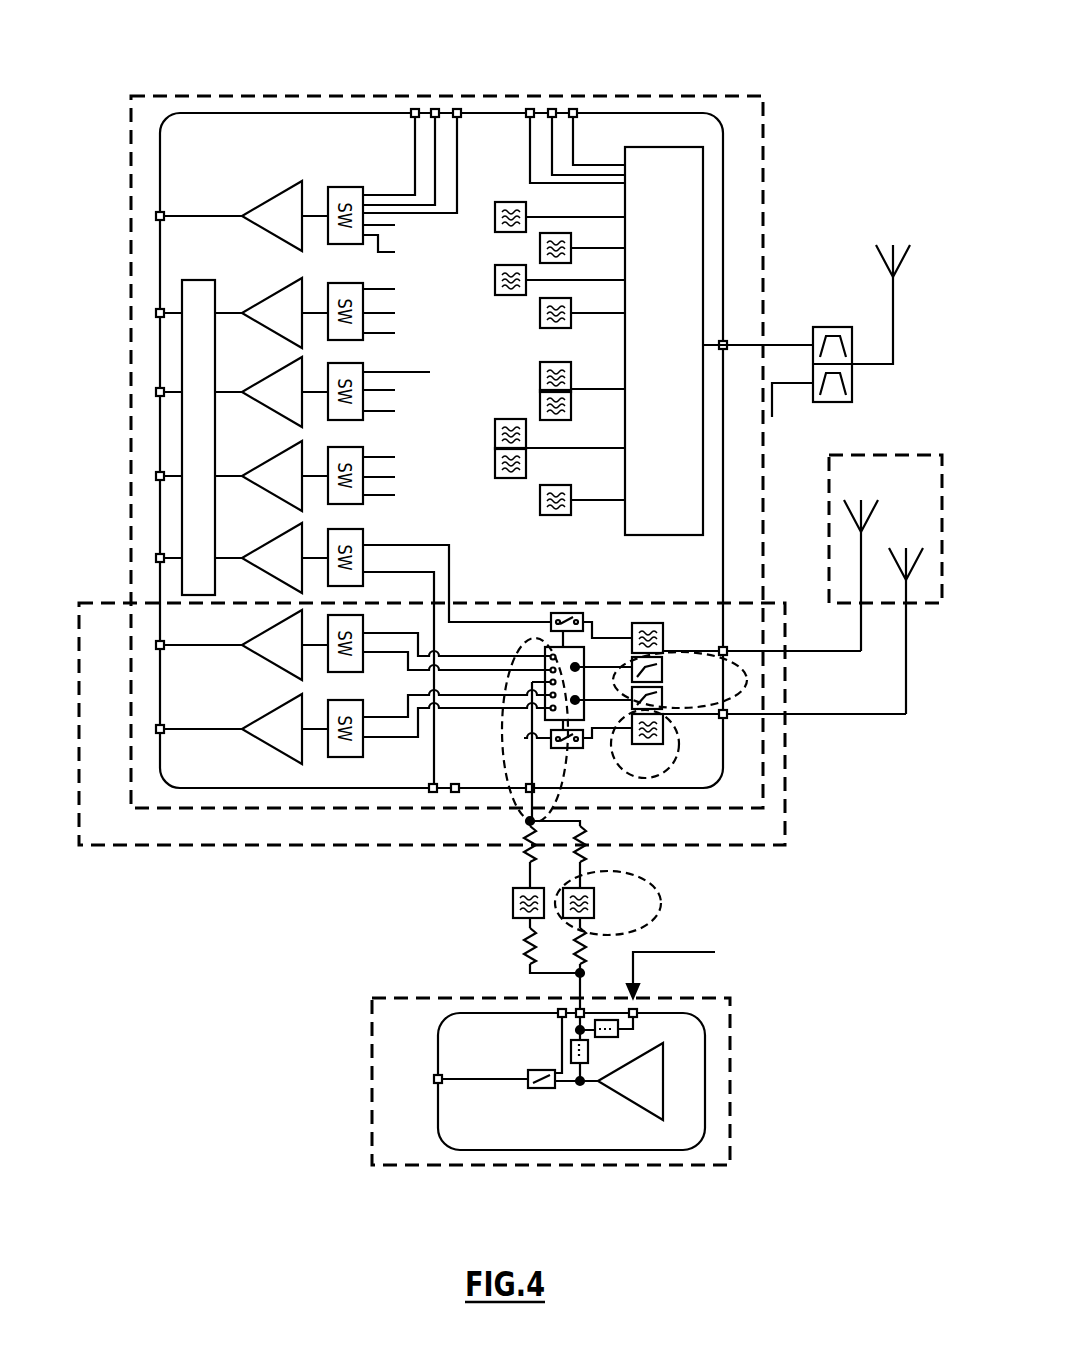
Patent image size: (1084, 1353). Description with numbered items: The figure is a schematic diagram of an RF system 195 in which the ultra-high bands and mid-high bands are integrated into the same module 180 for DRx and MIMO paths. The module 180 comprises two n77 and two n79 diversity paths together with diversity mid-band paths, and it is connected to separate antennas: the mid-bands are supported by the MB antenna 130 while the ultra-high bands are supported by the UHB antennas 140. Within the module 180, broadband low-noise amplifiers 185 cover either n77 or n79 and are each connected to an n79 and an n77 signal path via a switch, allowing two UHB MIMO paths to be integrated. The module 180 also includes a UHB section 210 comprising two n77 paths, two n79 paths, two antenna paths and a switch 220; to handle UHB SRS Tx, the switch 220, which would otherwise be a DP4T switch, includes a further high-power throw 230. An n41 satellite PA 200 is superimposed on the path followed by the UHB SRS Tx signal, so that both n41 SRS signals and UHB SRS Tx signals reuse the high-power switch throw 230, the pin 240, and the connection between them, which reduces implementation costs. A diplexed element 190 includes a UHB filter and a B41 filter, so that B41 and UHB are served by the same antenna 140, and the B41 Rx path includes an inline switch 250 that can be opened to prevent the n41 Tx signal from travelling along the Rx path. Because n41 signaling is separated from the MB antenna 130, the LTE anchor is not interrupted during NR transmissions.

The RF system 195 is at (835, 55).
The module 180 is at (780, 137).
The UHB section 210 is at (100, 602).
The broadband low-noise amplifiers 185 is at (265, 722).
The inline switch 250 is at (566, 612).
The switch 220 is at (585, 683).
The high-power switch throw 230 is at (553, 681).
The pin 240 is at (545, 776).
The diplexed element 190 is at (676, 646).
The MB antenna 130 is at (876, 258).
The UHB antennas 140 is at (901, 455).
The n41 satellite PA 200 is at (745, 1082).